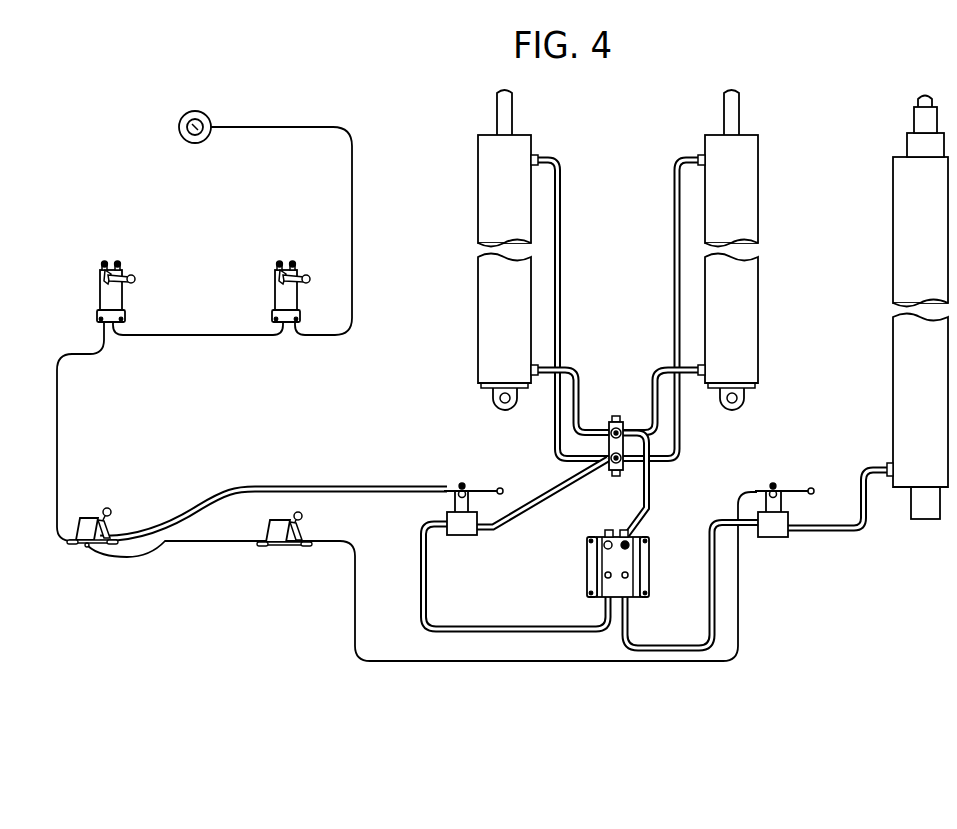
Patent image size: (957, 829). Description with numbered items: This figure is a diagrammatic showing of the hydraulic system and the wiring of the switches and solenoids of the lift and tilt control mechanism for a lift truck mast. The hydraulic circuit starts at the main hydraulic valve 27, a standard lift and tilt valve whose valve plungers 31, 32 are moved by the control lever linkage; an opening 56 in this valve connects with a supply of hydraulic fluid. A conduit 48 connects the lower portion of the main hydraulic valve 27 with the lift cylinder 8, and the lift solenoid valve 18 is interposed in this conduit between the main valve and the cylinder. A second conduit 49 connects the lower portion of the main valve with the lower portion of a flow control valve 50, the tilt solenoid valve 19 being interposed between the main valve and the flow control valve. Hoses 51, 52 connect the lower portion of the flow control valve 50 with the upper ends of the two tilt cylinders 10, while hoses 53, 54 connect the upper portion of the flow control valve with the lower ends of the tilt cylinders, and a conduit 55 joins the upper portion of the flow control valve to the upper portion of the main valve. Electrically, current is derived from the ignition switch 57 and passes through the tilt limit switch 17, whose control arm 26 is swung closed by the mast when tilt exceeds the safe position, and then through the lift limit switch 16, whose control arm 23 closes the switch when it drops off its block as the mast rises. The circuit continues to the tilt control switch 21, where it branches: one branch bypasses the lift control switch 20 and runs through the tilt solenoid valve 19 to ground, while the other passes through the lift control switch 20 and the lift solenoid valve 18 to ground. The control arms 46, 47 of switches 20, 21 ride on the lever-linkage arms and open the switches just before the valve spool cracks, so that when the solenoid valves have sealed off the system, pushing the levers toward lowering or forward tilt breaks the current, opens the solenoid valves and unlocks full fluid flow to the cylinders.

The lift cylinder 8 is at (899, 272).
The tilt cylinders 10 is at (492, 288).
The lift limit switch 16 is at (106, 278).
The tilt limit switch 17 is at (278, 278).
The lift solenoid valve 18 is at (781, 522).
The tilt solenoid valve 19 is at (458, 528).
The lift control switch 20 is at (269, 518).
The tilt control switch 21 is at (94, 512).
The control arm 23 is at (134, 272).
The control arm 26 is at (309, 272).
The main hydraulic valve 27 is at (591, 571).
The valve plunger 31 is at (608, 528).
The valve plunger 32 is at (624, 528).
The control arm 46 is at (296, 516).
The control arm 47 is at (103, 511).
The conduit 48 is at (712, 578).
The conduit 49 is at (537, 511).
The flow control valve 50 is at (608, 446).
The hose 51 is at (560, 289).
The hose 52 is at (675, 286).
The hose 53 is at (579, 398).
The hose 54 is at (652, 405).
The conduit 55 is at (651, 489).
The opening 56 is at (606, 540).
The ignition switch 57 is at (206, 136).